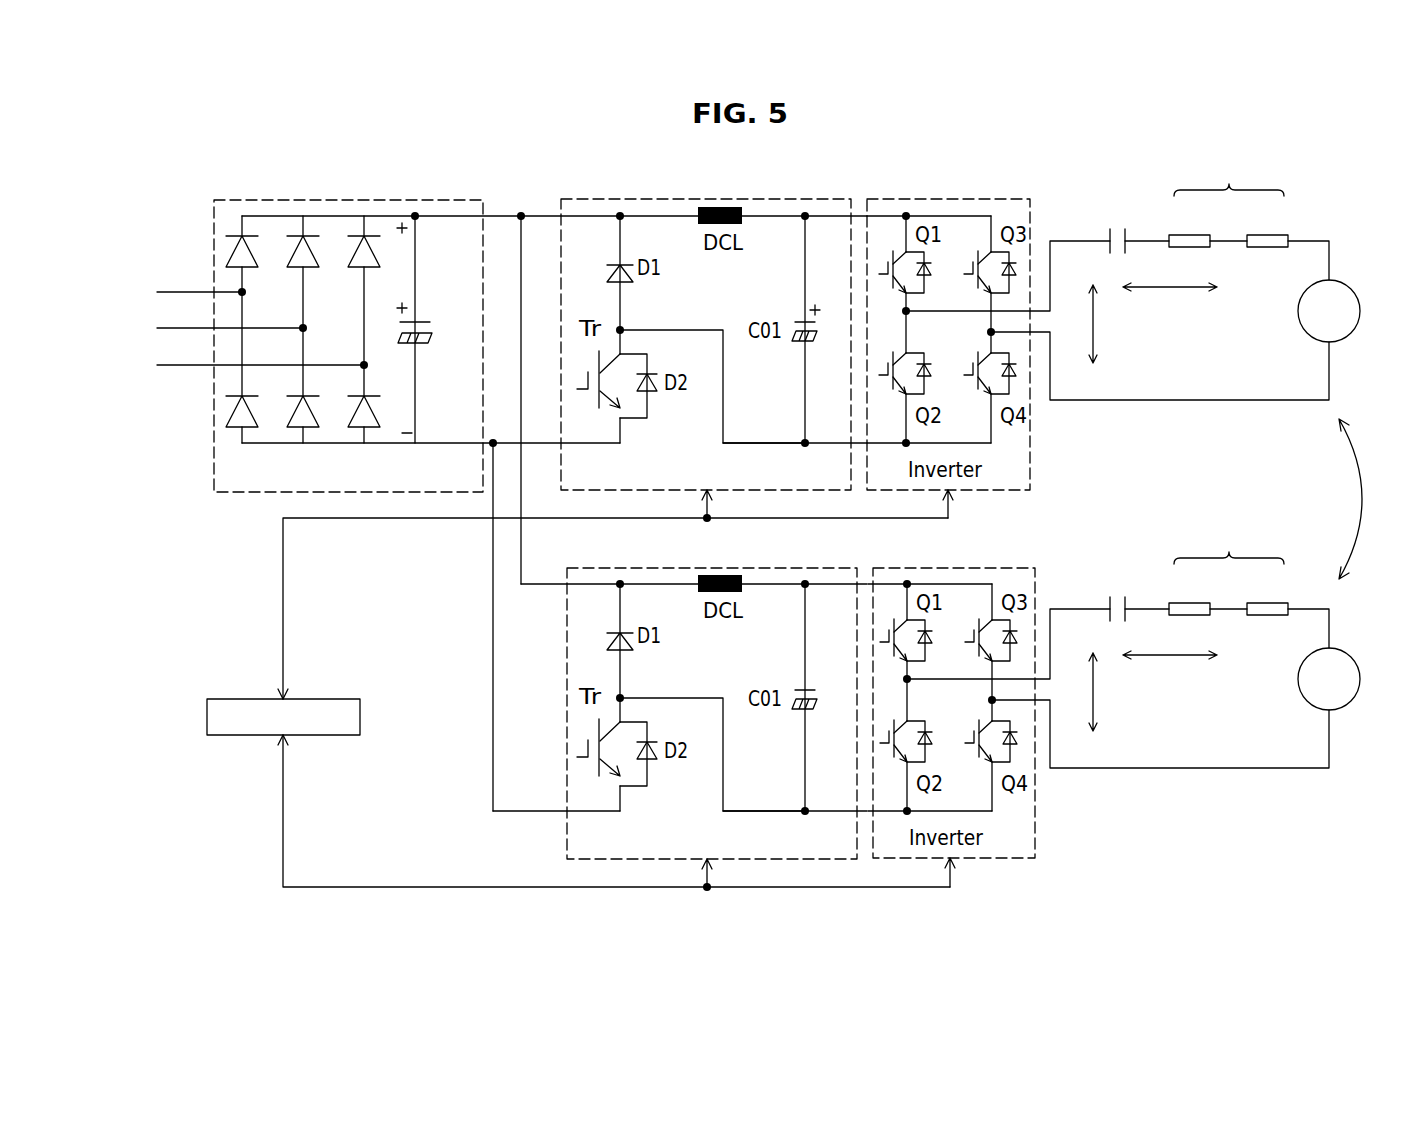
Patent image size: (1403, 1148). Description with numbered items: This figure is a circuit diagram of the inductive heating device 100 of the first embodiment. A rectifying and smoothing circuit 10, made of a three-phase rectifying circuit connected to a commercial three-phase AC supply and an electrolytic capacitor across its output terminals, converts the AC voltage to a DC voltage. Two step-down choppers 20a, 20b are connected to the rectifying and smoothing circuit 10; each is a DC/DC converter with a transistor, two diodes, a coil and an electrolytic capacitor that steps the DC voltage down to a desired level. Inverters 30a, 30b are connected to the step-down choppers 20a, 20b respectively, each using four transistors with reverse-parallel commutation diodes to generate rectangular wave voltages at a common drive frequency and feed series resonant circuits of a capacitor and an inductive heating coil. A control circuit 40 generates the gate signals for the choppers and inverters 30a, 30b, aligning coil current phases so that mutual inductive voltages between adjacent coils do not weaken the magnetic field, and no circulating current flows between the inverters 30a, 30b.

The inductive heating device 100 is at (936, 185).
The rectifying and smoothing circuit 10 is at (425, 200).
The step-down chopper 20a is at (766, 198).
The step-down chopper 20b is at (771, 567).
The inverter 30a is at (1008, 198).
The inverter 30b is at (890, 567).
The control circuit 40 is at (333, 699).